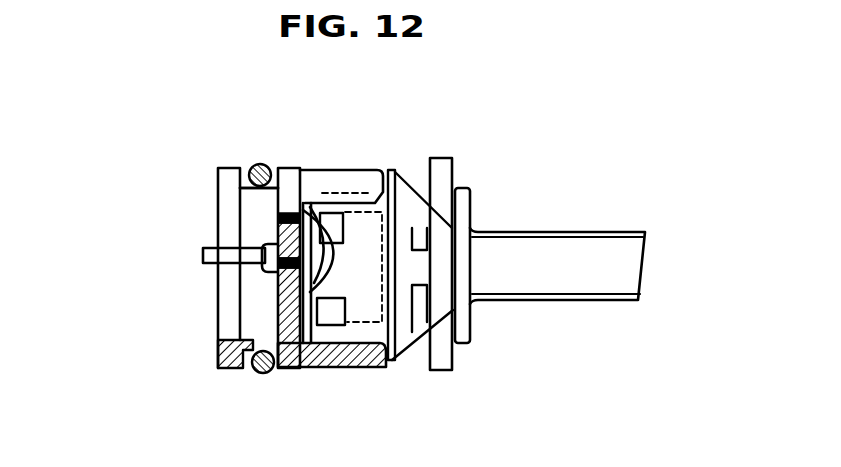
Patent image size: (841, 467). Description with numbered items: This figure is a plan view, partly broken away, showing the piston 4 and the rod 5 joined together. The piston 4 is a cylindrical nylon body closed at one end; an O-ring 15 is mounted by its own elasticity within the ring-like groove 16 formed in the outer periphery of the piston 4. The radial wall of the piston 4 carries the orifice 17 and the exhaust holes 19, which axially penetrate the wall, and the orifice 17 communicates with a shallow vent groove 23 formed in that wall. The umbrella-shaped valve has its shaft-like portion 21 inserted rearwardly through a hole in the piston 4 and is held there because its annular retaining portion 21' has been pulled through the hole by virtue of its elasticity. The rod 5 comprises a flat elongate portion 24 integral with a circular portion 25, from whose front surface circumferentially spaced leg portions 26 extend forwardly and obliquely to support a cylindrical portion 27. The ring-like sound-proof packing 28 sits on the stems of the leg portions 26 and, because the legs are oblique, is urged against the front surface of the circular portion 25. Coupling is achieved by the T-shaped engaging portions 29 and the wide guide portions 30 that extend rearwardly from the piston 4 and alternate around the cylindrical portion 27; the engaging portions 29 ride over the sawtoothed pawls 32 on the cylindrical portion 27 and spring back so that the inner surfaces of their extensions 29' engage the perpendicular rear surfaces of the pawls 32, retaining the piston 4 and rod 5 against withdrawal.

The piston 4 is at (218, 185).
The rod 5 is at (206, 217).
The O-ring 15 is at (265, 163).
The ring-like groove 16 is at (245, 188).
The orifice 17 is at (300, 295).
The exhaust holes 19 is at (278, 213).
The shaft-like portion 21 is at (202, 245).
The retaining portion 21' is at (207, 276).
The vent groove 23 is at (290, 322).
The flat elongate portion 24 is at (567, 290).
The circular portion 25 is at (468, 340).
The leg portions 26 is at (417, 190).
The cylindrical portion 27 is at (388, 363).
The sound-proof packing 28 is at (444, 172).
The engaging portions 29 is at (420, 243).
The extensions 29' is at (353, 280).
The guide portions 30 is at (318, 180).
The pawls 32 is at (340, 213).